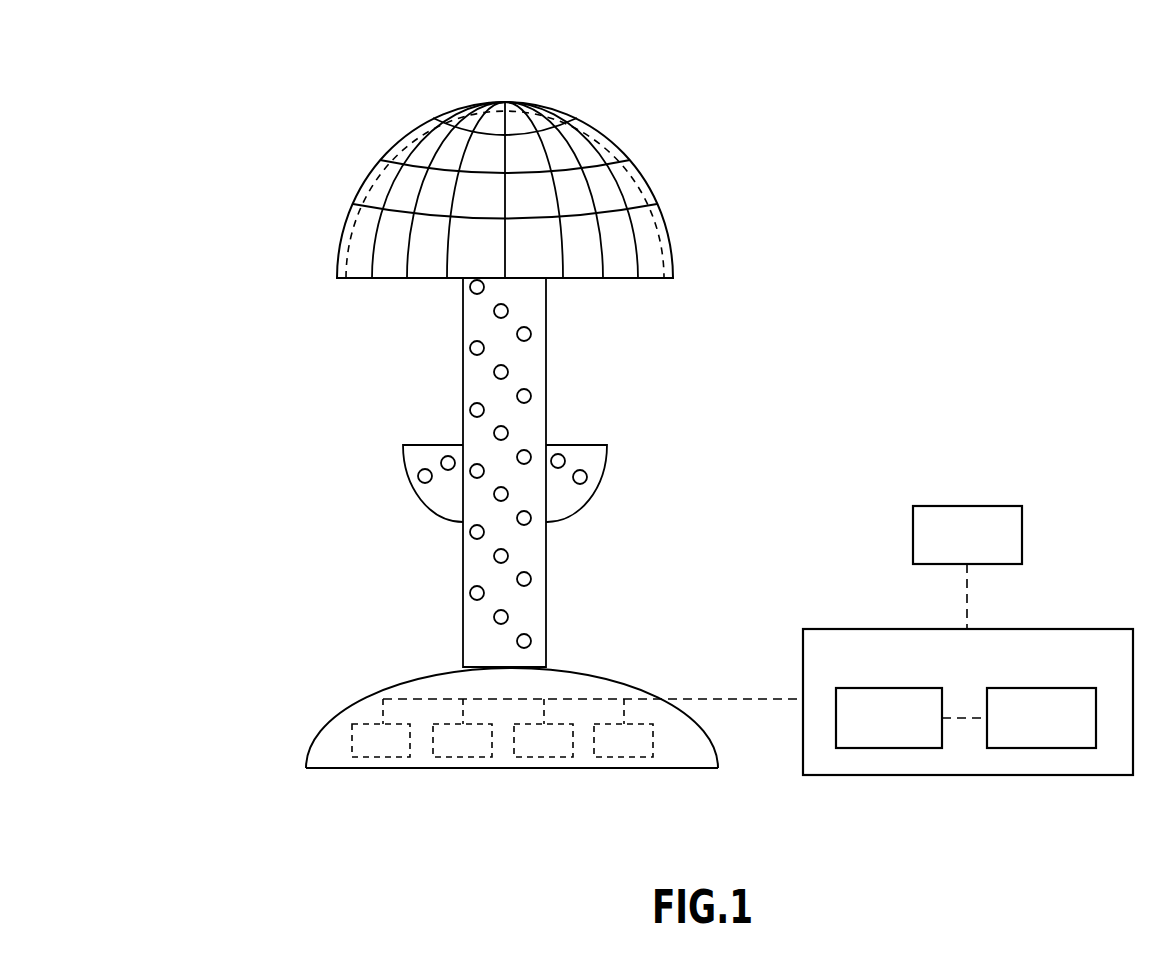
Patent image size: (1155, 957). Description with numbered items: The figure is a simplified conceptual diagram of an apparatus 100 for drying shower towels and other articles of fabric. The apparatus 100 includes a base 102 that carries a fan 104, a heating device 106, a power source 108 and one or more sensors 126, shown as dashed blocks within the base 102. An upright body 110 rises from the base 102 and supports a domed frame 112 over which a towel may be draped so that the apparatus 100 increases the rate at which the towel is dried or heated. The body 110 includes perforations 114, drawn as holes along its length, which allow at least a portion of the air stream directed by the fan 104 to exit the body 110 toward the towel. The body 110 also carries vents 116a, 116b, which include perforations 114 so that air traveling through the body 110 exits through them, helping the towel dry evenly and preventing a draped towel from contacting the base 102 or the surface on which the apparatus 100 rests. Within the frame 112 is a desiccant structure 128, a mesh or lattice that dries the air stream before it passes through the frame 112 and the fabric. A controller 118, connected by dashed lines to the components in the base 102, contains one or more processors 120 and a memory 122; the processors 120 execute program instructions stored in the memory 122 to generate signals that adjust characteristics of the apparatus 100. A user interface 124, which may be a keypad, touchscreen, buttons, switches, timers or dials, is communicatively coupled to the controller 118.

The apparatus 100 is at (270, 45).
The base 102 is at (349, 708).
The fan 104 is at (398, 751).
The heating device 106 is at (479, 751).
The power source 108 is at (561, 751).
The body 110 is at (463, 357).
The frame 112 is at (371, 172).
The perforations 114 is at (531, 392).
The vent 116a is at (431, 445).
The vent 116b is at (580, 445).
The controller 118 is at (843, 657).
The processors 120 is at (872, 730).
The memory 122 is at (1024, 730).
The user interface 124 is at (950, 547).
The sensors 126 is at (641, 751).
The desiccant structure 128 is at (628, 162).